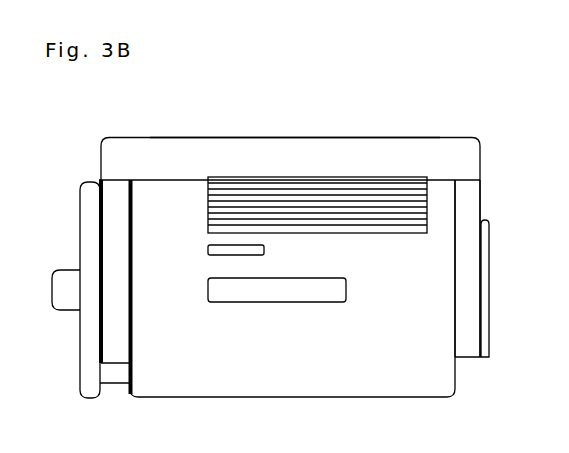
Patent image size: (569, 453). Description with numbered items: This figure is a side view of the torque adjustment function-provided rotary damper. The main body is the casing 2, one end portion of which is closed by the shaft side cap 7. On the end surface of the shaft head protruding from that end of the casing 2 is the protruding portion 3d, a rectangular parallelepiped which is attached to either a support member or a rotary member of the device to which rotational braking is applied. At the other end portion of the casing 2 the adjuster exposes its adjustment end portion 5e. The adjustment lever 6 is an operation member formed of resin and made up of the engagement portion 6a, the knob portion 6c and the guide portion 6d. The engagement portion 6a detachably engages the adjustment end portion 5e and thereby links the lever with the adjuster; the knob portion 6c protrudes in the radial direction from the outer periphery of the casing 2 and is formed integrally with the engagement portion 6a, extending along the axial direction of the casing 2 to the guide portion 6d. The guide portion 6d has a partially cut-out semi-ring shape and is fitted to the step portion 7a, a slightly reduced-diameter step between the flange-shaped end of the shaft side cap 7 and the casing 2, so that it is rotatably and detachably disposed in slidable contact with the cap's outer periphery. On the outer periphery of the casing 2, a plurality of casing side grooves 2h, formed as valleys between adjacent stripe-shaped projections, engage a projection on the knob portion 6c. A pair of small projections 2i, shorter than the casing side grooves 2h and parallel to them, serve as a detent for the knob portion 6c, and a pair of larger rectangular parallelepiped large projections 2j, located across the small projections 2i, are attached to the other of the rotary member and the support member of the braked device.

The casing 2 is at (405, 400).
The casing side groove 2h is at (208, 220).
The small projection 2i is at (207, 256).
The large projection 2j is at (322, 302).
The protruding portion 3d is at (67, 281).
The adjustment end portion 5e is at (489, 297).
The adjustment lever 6 is at (373, 137).
The engagement portion 6a is at (472, 200).
The knob portion 6c is at (270, 137).
The guide portion 6d is at (117, 200).
The shaft side cap 7 is at (76, 333).
The step portion 7a is at (113, 373).